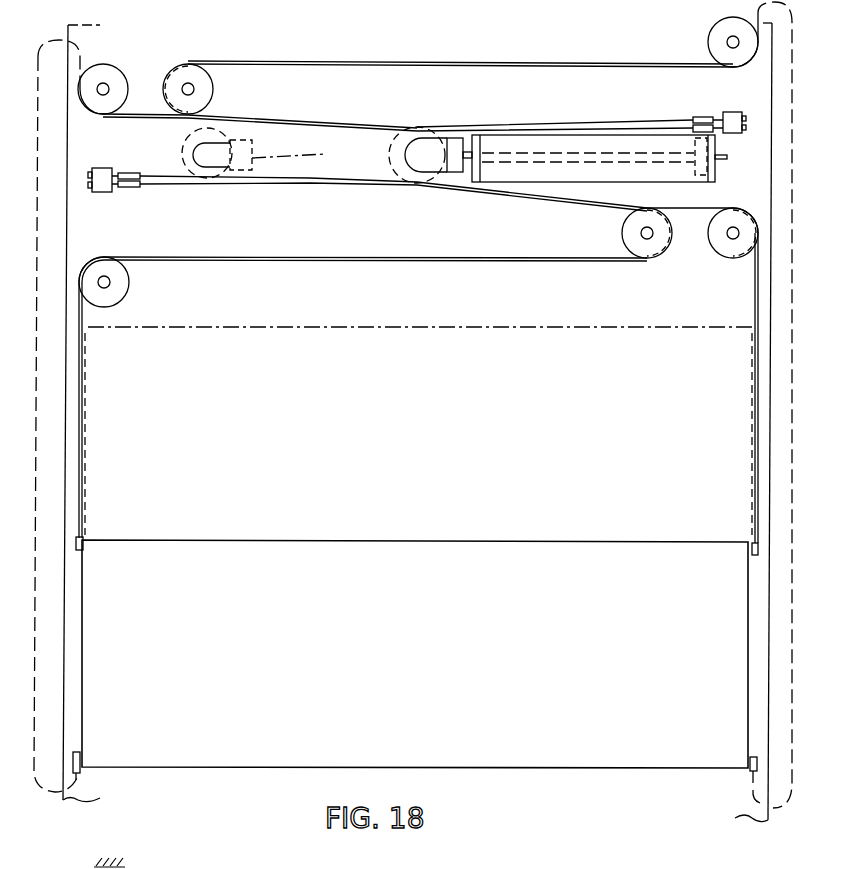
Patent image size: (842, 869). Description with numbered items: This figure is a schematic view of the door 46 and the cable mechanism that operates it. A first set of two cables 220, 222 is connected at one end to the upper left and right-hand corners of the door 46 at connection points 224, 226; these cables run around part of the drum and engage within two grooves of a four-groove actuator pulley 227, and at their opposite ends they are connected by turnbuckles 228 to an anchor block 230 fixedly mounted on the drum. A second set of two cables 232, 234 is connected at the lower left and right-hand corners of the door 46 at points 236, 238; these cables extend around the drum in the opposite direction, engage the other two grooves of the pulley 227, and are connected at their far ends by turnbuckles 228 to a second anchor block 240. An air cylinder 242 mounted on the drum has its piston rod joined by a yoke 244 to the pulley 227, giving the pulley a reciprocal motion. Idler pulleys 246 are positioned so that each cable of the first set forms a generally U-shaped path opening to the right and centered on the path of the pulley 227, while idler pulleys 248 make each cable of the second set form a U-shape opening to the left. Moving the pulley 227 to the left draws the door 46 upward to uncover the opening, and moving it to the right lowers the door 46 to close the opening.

The door 46 is at (415, 654).
The cable 220 is at (295, 258).
The cable 222 is at (755, 298).
The connection point 224 is at (77, 550).
The connection point 226 is at (757, 555).
The four-groove actuator pulley 227 is at (417, 183).
The turnbuckle 228 is at (125, 187).
The anchor block 230 is at (737, 133).
The cable 232 is at (33, 657).
The cable 234 is at (465, 63).
The connection point 236 is at (77, 752).
The connection point 238 is at (760, 757).
The anchor block 240 is at (90, 150).
The air cylinder 242 is at (547, 173).
The yoke 244 is at (457, 173).
The idler pulley 246 is at (127, 282).
The idler pulley 248 is at (103, 70).